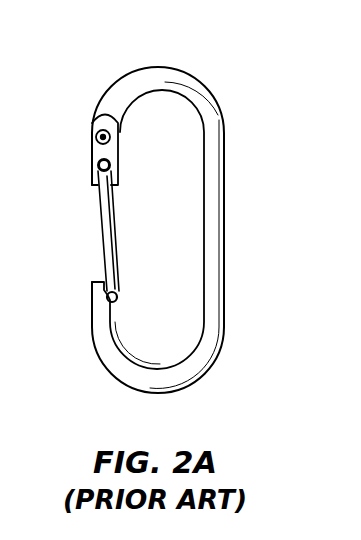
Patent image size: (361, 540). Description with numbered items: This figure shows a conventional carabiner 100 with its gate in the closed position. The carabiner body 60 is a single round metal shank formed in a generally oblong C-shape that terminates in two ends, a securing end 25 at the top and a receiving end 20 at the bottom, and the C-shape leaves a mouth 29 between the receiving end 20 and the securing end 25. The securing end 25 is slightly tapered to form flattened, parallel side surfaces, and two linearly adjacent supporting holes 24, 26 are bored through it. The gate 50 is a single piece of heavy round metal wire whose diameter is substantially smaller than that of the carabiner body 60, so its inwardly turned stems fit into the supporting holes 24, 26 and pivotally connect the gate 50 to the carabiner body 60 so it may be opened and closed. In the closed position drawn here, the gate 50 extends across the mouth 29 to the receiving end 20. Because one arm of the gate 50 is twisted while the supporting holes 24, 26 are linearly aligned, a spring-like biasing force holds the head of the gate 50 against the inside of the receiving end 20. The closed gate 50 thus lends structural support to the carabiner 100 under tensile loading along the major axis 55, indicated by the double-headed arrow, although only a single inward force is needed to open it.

The carabiner 100 is at (191, 206).
The receiving end 20 is at (92, 337).
The supporting hole 24 is at (111, 137).
The securing end 25 is at (91, 152).
The supporting hole 26 is at (110, 165).
The mouth 29 is at (83, 177).
The gate 50 is at (142, 231).
The major axis 55 is at (253, 131).
The carabiner body 60 is at (203, 82).